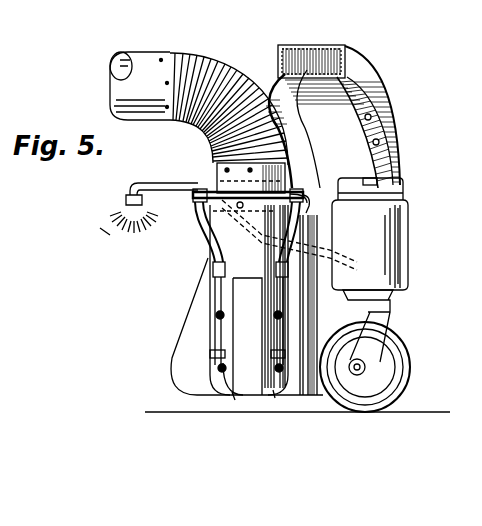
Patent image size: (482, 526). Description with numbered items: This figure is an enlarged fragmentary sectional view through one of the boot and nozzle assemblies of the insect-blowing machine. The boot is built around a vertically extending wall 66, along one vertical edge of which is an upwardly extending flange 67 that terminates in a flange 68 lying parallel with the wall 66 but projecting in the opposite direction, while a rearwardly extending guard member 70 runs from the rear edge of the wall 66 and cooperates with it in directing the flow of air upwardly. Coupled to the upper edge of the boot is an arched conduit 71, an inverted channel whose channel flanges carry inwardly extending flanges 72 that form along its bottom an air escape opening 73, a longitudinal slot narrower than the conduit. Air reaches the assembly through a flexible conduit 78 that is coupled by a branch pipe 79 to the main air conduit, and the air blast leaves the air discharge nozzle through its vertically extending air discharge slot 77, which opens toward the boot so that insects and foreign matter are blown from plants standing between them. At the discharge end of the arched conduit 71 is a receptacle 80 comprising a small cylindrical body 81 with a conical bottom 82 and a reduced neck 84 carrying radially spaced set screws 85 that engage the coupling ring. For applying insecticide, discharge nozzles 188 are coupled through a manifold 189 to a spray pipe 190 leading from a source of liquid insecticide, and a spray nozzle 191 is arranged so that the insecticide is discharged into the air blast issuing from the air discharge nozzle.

The vertically extending wall 66 is at (286, 404).
The upwardly extending flange 67 is at (135, 13).
The flange 68 is at (314, 203).
The guard member 70 is at (181, 348).
The arched conduit 71 is at (268, 64).
The inwardly extending flanges 72 is at (376, 116).
The air escape opening 73 is at (382, 141).
The air discharge slot 77 is at (241, 405).
The flexible conduit 78 is at (224, 62).
The branch pipe 79 is at (139, 55).
The receptacle 80 is at (392, 240).
The cylindrical body 81 is at (400, 263).
The conical bottom 82 is at (396, 305).
The reduced neck 84 is at (404, 186).
The set screws 85 is at (380, 178).
The discharge nozzles 188 is at (216, 315).
The manifold 189 is at (213, 295).
The spray pipe 190 is at (175, 182).
The spray nozzle 191 is at (106, 224).